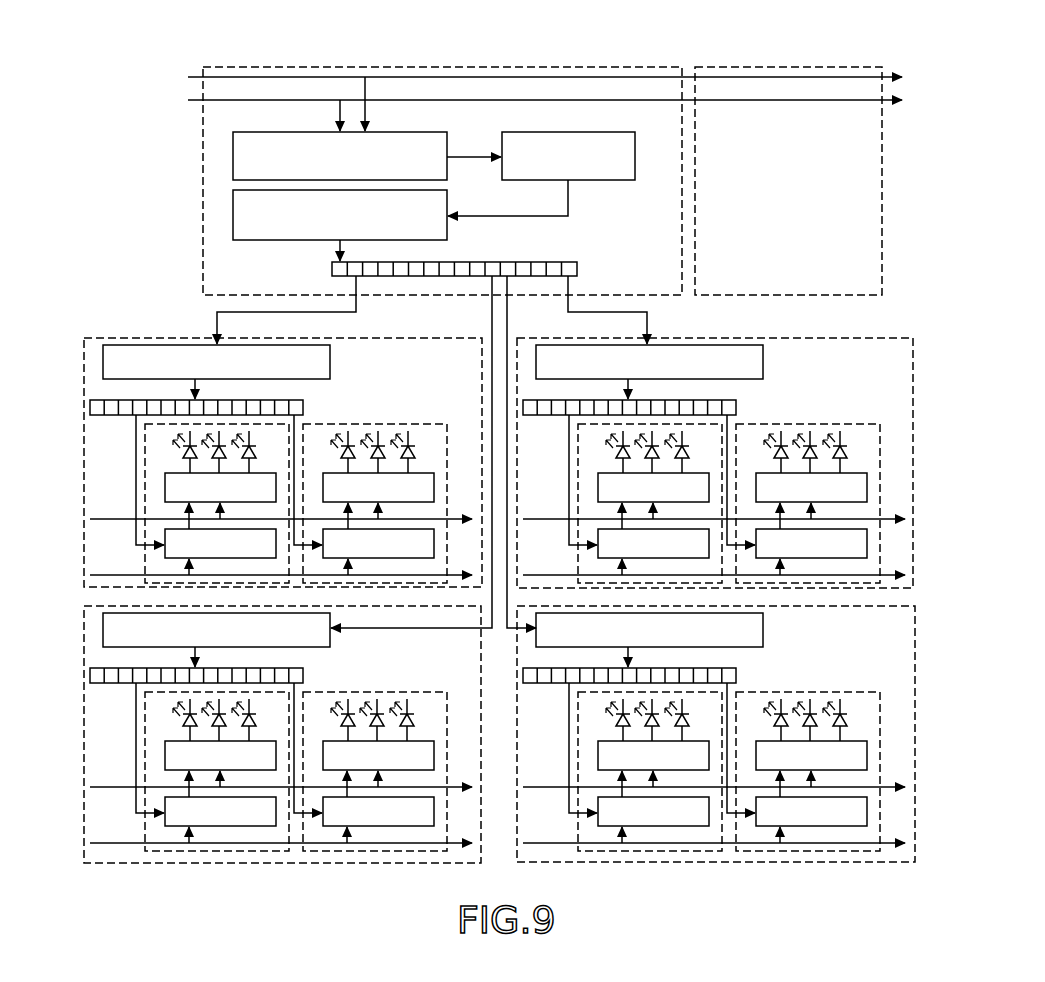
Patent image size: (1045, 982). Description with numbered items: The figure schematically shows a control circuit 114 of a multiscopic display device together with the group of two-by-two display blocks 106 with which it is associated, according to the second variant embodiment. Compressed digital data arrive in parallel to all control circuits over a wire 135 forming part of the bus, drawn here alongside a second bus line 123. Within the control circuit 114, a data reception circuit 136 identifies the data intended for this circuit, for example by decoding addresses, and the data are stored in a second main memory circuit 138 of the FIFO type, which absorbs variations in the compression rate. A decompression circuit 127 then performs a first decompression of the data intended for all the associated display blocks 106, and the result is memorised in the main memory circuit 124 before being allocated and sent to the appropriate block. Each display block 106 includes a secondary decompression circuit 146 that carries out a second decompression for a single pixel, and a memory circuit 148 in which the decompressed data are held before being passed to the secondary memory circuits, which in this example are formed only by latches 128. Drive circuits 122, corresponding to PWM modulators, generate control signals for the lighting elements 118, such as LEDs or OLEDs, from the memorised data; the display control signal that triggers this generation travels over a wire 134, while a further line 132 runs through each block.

The display block 106 is at (84, 353).
The control circuit 114 is at (530, 67).
The lighting elements 118 is at (183, 450).
The drive circuit 122 is at (165, 483).
The data bus 123 is at (268, 77).
The main memory circuit 124 is at (332, 268).
The decompression circuit 127 is at (238, 233).
The latch 128 is at (143, 551).
The power line 132 is at (105, 578).
The wire 134 is at (105, 519).
The wire 135 is at (222, 98).
The data reception circuit 136 is at (238, 165).
The second main memory circuit 138 is at (592, 140).
The secondary decompression circuit 146 is at (103, 360).
The memory circuit 148 is at (90, 408).